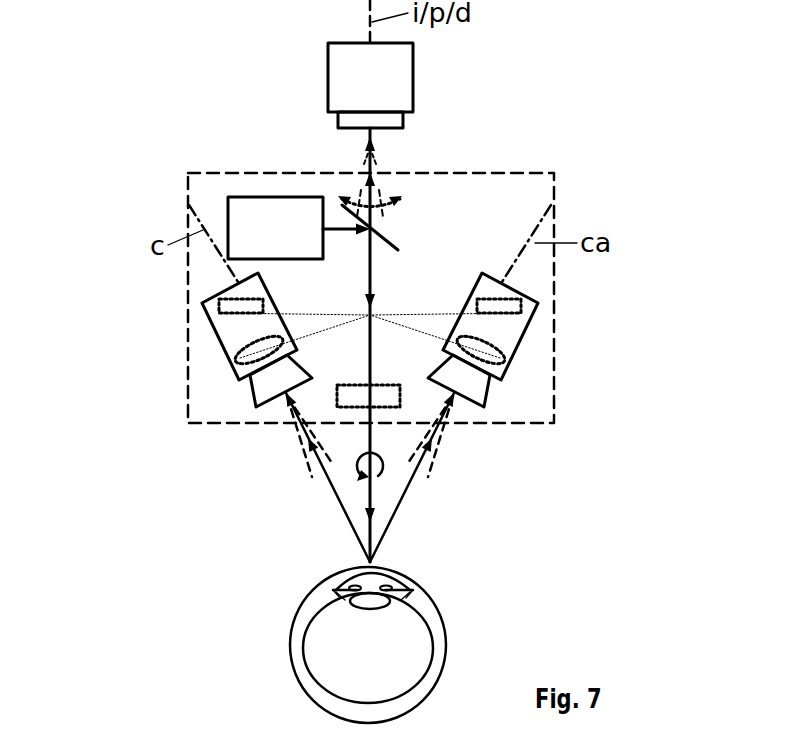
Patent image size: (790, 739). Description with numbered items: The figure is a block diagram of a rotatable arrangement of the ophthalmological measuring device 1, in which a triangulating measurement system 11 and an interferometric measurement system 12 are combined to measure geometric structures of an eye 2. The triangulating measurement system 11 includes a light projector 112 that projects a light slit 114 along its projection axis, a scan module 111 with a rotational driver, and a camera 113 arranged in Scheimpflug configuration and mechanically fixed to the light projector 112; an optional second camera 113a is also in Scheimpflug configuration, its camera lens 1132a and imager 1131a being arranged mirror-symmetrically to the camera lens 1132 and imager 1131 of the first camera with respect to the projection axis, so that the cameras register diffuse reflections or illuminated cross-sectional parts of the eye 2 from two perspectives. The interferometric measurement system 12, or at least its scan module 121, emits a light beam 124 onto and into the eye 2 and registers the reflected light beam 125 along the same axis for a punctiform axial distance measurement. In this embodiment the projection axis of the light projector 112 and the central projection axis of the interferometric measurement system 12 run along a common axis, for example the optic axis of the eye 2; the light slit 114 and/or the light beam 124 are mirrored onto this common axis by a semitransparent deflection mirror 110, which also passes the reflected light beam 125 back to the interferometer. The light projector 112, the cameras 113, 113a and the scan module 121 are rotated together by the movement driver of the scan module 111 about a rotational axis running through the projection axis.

The ophthalmological measuring device 1 is at (204, 466).
The eye 2 is at (274, 673).
The triangulating measurement system 11 is at (210, 405).
The interferometric measurement system 12 is at (398, 82).
The deflection mirror 110 is at (383, 242).
The scan module 111 is at (392, 387).
The light projector 112 is at (256, 205).
The camera 113 is at (232, 340).
The second camera 113a is at (510, 342).
The light slit 114 is at (343, 228).
The scan module 121 is at (395, 118).
The light beam 124 is at (375, 272).
The reflected light beam 125 is at (377, 188).
The imager 1131 is at (220, 310).
The imager 1131a is at (518, 307).
The camera lens 1132 is at (237, 357).
The camera lens 1132a is at (500, 355).